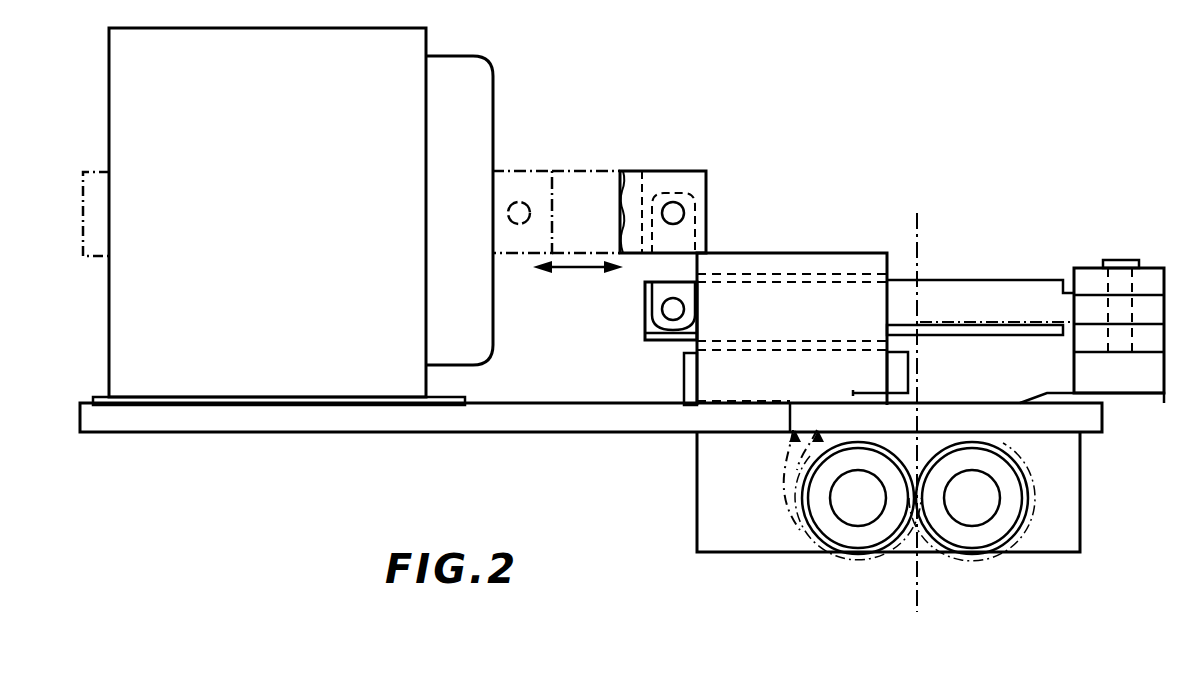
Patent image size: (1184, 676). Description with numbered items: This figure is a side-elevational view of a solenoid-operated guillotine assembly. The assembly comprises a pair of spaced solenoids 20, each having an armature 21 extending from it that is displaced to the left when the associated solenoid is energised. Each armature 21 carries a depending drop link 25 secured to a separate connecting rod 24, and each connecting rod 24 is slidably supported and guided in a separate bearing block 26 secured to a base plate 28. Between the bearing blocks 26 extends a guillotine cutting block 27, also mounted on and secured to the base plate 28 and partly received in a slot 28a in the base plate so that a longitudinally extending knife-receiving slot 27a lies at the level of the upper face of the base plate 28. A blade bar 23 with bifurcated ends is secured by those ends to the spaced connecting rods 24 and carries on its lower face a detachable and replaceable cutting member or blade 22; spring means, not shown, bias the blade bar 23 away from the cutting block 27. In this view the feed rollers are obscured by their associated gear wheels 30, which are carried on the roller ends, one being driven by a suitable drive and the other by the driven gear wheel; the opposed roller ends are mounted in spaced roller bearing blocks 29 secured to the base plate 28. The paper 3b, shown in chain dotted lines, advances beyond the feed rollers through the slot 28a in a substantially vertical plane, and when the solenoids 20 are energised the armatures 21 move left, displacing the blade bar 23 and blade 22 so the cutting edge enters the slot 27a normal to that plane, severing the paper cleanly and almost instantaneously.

The solenoid 20 is at (282, 273).
The armature 21 is at (633, 182).
The cutting member or blade 22 is at (1128, 404).
The blade bar 23 is at (1090, 270).
The connecting rod 24 is at (970, 296).
The drop link 25 is at (657, 266).
The bearing block 26 is at (790, 258).
The guillotine cutting block 27 is at (690, 372).
The knife-receiving slot 27a is at (912, 399).
The base plate 28 is at (543, 420).
The slot in the base plate 28a is at (790, 436).
The roller bearing block 29 is at (700, 500).
The gear wheel 30 is at (852, 540).
The paper 3b is at (918, 590).